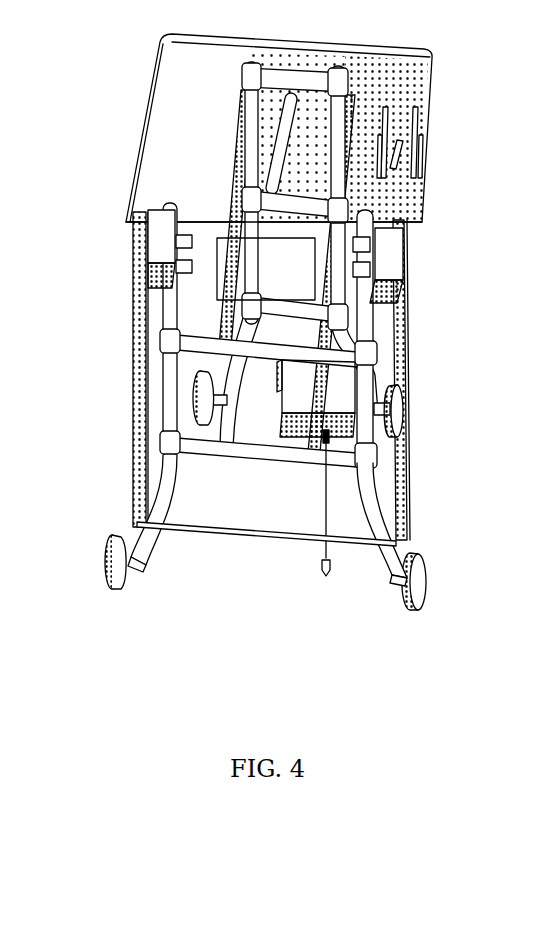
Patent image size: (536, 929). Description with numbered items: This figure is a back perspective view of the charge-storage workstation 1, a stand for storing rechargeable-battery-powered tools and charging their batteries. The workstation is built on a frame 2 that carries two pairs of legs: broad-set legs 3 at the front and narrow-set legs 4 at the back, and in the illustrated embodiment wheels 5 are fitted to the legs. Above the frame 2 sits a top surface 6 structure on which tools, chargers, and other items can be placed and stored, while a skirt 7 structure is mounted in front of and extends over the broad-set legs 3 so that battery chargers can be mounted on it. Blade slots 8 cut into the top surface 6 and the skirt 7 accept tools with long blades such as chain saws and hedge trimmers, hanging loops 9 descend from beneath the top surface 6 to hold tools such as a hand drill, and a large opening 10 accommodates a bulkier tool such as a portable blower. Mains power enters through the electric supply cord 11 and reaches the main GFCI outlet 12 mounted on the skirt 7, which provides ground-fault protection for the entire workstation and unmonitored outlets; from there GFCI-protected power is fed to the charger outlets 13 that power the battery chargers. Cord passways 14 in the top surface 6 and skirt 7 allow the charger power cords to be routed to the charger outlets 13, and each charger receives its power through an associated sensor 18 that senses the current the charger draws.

The charge-storage workstation 1 is at (61, 30).
The frame 2 is at (203, 450).
The broad-set legs 3 is at (148, 537).
The narrow-set legs 4 is at (233, 392).
The wheels 5 is at (207, 373).
The top surface 6 is at (431, 71).
The skirt 7 is at (247, 521).
The blade slots 8 is at (400, 147).
The hanging loops 9 is at (422, 172).
The large opening 10 is at (218, 292).
The electric supply cord 11 is at (330, 568).
The main GFCI outlet 12 is at (287, 397).
The charger outlets 13 is at (157, 235).
The cord passways 14 is at (287, 127).
The sensor 18 is at (192, 242).